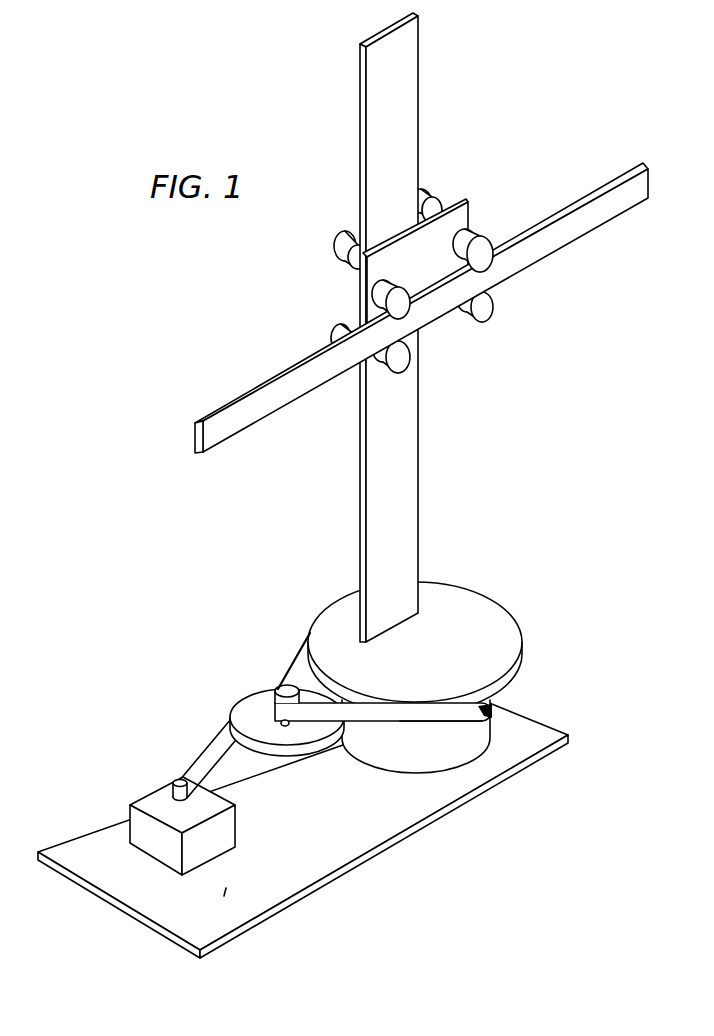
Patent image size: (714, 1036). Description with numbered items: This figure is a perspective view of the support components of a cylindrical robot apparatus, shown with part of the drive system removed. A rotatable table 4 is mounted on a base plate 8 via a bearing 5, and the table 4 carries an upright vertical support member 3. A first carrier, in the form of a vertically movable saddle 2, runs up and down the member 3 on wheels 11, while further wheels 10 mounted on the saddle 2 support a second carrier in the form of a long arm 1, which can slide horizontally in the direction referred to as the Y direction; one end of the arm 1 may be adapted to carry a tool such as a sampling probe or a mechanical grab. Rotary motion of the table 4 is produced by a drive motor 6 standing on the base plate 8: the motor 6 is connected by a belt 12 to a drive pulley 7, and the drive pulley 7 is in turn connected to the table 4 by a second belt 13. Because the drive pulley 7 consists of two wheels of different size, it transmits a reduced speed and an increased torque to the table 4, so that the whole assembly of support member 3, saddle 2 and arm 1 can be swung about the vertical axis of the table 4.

The arm 1 is at (204, 453).
The saddle 2 is at (358, 313).
The vertical support member 3 is at (419, 15).
The rotatable table 4 is at (474, 595).
The bearing 5 is at (492, 718).
The drive motor 6 is at (170, 801).
The drive pulley 7 is at (277, 689).
The base plate 8 is at (38, 851).
The wheels 10 is at (487, 245).
The wheels 11 is at (334, 262).
The belt 12 is at (310, 761).
The belt 13 is at (417, 717).